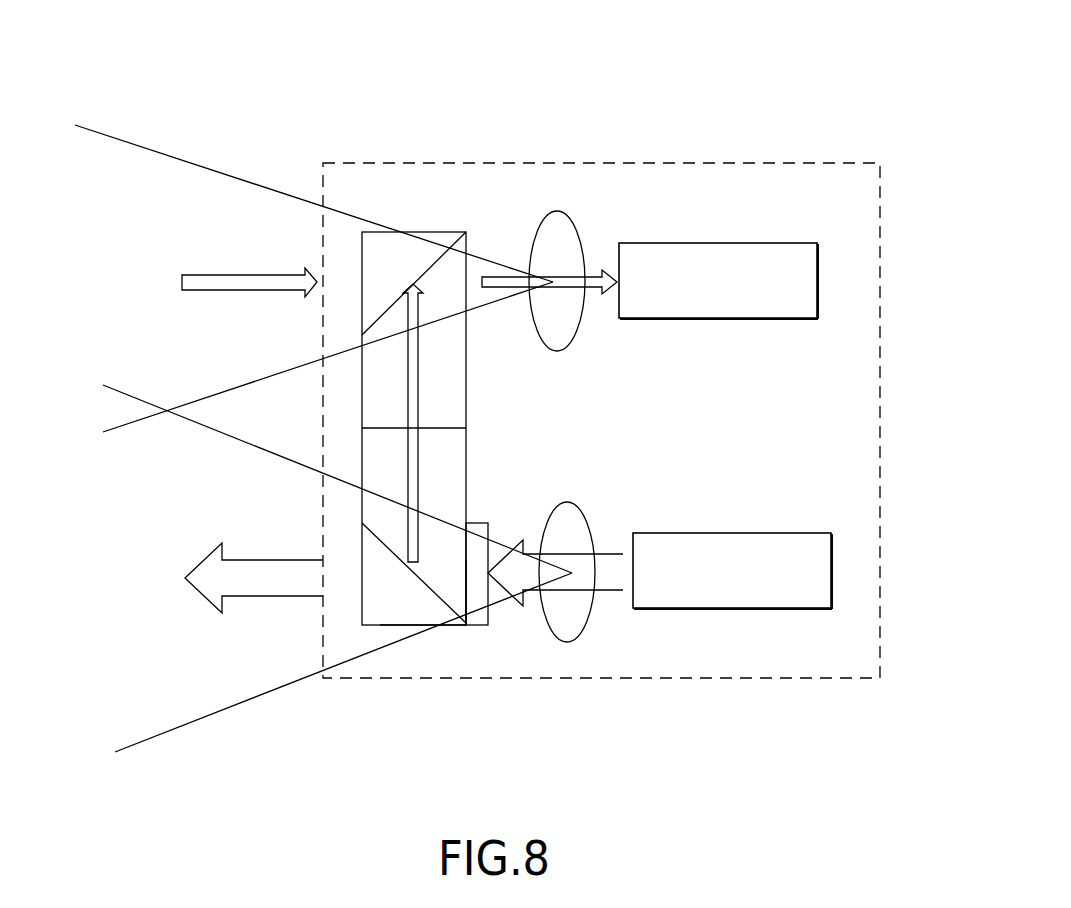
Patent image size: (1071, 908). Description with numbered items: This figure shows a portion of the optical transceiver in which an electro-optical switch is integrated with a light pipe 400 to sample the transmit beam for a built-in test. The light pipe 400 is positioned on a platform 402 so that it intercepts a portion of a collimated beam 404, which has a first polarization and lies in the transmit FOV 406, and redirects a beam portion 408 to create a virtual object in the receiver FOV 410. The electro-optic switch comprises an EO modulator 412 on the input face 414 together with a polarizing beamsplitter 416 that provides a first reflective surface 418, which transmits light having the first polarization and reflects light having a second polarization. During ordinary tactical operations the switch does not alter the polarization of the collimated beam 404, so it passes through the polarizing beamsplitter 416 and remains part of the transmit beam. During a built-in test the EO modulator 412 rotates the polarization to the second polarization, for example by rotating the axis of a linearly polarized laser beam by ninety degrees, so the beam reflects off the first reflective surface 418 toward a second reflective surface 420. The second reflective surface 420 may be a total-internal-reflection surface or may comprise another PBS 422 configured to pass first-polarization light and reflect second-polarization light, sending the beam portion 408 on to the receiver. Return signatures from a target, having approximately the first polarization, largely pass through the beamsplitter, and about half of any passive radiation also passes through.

The light pipe 400 is at (849, 101).
The platform 402 is at (833, 426).
The collimated beam 404 is at (607, 584).
The transmit FOV 406 is at (238, 703).
The beam portion 408 is at (418, 388).
The receiver FOV 410 is at (230, 176).
The EO modulator 412 is at (477, 517).
The input face 414 is at (465, 578).
The polarizing beamsplitter 416 is at (423, 583).
The first reflective surface 418 is at (423, 628).
The second reflective surface 420 is at (362, 303).
The PBS 422 is at (400, 245).